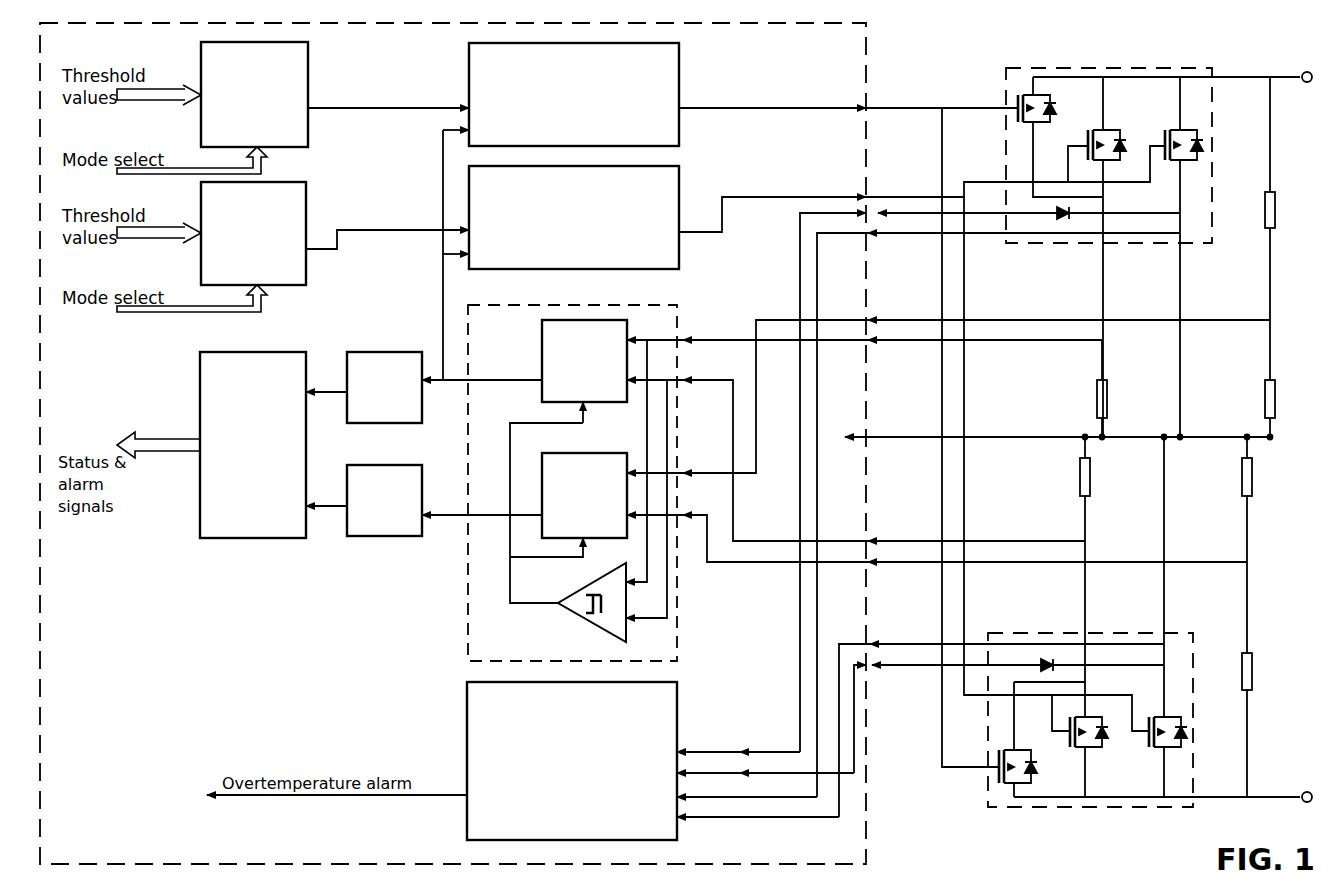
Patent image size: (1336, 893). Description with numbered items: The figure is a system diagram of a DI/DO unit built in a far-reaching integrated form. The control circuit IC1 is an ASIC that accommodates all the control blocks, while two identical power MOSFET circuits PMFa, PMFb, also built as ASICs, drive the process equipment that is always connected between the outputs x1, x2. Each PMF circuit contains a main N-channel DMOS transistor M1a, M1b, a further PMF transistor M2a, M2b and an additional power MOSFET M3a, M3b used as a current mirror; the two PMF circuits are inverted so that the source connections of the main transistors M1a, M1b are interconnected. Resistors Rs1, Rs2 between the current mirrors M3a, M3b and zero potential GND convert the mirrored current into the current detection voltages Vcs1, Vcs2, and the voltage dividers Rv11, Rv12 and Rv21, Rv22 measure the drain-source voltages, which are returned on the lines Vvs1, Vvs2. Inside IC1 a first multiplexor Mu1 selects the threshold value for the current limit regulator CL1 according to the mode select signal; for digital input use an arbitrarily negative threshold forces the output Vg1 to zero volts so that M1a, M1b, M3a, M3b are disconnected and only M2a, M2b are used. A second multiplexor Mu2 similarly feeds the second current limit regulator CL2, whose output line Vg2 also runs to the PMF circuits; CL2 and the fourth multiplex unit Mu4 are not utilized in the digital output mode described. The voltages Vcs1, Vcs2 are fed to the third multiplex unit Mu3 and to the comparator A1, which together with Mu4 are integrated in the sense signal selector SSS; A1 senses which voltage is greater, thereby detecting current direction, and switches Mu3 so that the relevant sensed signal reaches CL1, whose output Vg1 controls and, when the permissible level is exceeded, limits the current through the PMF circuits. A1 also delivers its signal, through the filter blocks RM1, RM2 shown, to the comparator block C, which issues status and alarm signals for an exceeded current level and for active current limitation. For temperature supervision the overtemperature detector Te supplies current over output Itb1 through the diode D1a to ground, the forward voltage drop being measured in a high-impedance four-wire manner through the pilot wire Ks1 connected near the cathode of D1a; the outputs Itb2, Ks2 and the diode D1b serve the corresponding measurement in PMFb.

The control circuit IC1 is at (453, 443).
The first multiplexor Mu1 is at (306, 213).
The multiplexer Mu2 is at (308, 73).
The third multiplex unit Mu3 is at (650, 324).
The fourth multiplex unit Mu4 is at (583, 453).
The current limit regulator CL1 is at (703, 168).
The second current limit regulator unit CL2 is at (703, 45).
The sense signal selector SSS is at (572, 483).
The comparator A1 is at (626, 638).
The comparator C is at (265, 538).
The RMS filter RM1 is at (384, 374).
The RMS filter RM2 is at (384, 514).
The overtemperature detector circuit Te is at (677, 712).
The gate voltage line Vg2 is at (848, 428).
The output Vg1 is at (922, 438).
The output Itb1 is at (928, 481).
The measuring output Ks1 is at (928, 515).
The voltage sense line Vvs1 is at (948, 387).
The current detection voltage Vcs1 is at (864, 352).
The zero potential GND is at (1057, 427).
The current detection voltage Vcs2 is at (856, 460).
The voltage sense line Vvs2 is at (937, 550).
The sensor line Ks2 is at (920, 720).
The temperature sensor current line Itb2 is at (920, 719).
The power MOSFET circuit PMFa is at (1036, 68).
The power MOSFET circuit PMFb is at (1032, 633).
The output x1 is at (1298, 63).
The output x2 is at (1293, 783).
The main transistor M1a is at (1173, 257).
The PMF transistor M2a is at (1060, 137).
The additional power MOSFET M3a is at (1094, 257).
The main transistor M1b is at (1157, 757).
The PMF transistor M2b is at (1042, 740).
The additional power MOSFET M3b is at (1078, 757).
The diode D1a is at (1051, 222).
The diode D1b is at (1029, 659).
The resistor Rs1 is at (1082, 388).
The resistor Rs2 is at (1065, 577).
The voltage divider resistor Rv11 is at (1251, 228).
The voltage divider resistor Rv12 is at (1247, 408).
The voltage divider resistor Rv21 is at (1227, 715).
The voltage divider resistor Rv22 is at (1224, 545).